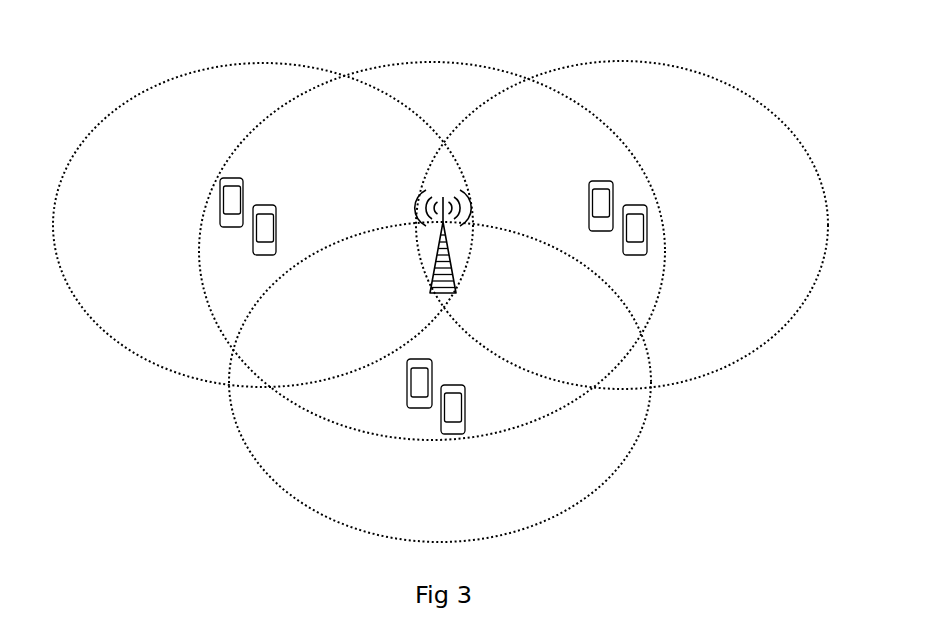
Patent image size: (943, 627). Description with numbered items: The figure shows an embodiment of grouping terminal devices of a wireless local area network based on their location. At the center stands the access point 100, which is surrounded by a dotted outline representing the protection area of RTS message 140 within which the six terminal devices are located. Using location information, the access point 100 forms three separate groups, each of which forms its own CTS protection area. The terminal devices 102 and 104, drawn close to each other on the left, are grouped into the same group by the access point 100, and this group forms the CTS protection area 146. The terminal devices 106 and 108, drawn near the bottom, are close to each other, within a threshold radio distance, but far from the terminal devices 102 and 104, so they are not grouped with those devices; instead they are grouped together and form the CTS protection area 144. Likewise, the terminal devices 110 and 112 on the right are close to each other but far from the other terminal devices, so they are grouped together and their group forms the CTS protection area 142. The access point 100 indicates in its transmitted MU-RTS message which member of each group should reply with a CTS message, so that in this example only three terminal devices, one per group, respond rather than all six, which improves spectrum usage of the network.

The access point 100 is at (434, 271).
The terminal device 102 is at (243, 197).
The terminal device 104 is at (276, 232).
The terminal device 106 is at (432, 378).
The terminal device 108 is at (465, 413).
The terminal device 110 is at (589, 207).
The terminal device 112 is at (623, 231).
The protection area of RTS message 140 is at (447, 62).
The CTS protection area 142 is at (703, 75).
The CTS protection area 144 is at (542, 525).
The CTS protection area 146 is at (133, 100).